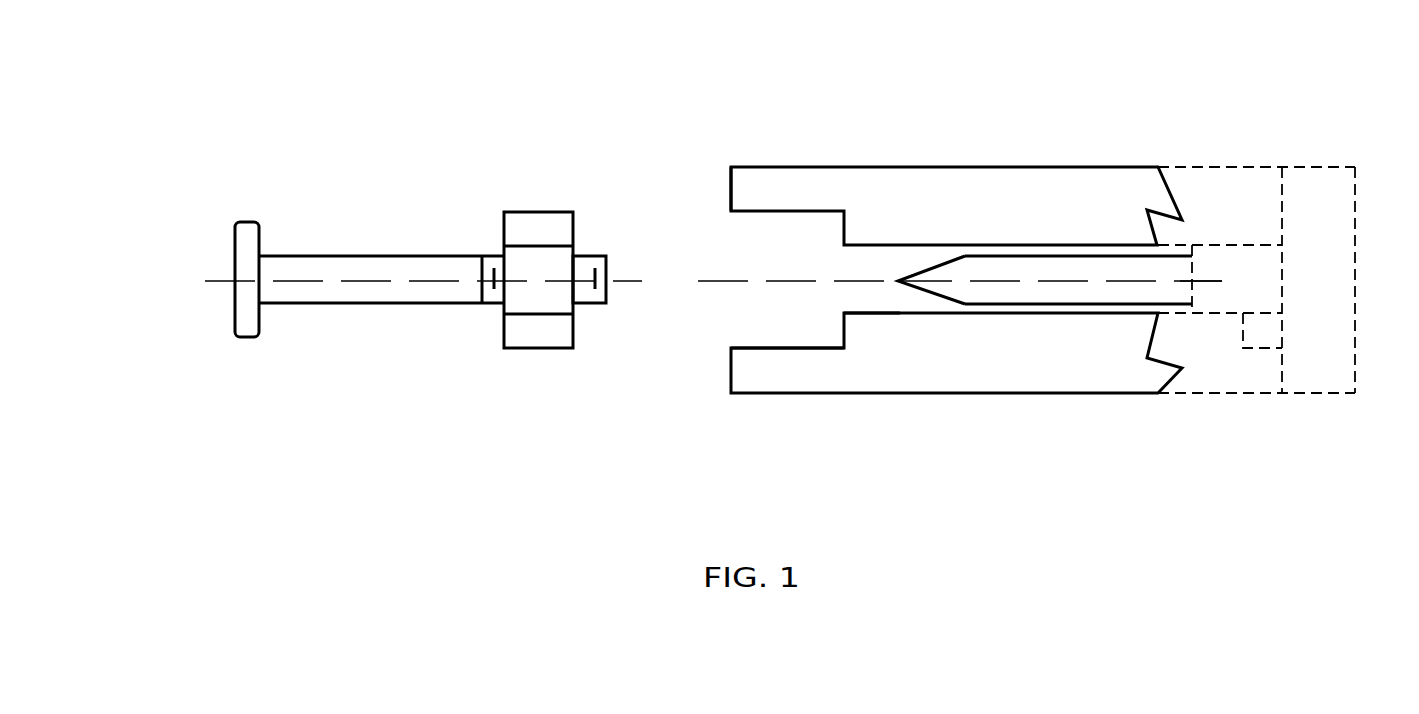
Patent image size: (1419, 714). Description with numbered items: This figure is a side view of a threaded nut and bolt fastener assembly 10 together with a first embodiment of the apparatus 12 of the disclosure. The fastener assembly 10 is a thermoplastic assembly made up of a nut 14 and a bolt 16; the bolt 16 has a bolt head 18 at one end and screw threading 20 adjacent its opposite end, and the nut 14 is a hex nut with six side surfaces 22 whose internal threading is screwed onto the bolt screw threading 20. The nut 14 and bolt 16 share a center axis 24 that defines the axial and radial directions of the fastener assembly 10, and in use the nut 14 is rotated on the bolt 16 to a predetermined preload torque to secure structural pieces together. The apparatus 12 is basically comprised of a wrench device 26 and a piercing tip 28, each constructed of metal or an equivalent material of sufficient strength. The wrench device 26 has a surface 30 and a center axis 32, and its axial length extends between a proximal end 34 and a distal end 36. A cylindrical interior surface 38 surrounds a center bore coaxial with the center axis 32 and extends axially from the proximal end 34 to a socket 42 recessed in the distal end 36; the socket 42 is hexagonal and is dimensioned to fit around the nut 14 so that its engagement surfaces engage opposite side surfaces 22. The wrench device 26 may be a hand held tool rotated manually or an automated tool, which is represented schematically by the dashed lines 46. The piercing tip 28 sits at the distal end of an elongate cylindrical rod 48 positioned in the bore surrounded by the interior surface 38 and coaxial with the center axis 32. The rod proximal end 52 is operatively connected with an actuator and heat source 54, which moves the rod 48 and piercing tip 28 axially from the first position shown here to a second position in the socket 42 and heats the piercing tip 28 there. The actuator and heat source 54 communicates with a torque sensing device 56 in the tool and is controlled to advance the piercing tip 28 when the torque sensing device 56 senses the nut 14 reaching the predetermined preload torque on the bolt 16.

The fastener assembly 10 is at (382, 195).
The apparatus 12 is at (1060, 85).
The nut 14 is at (540, 330).
The bolt 16 is at (384, 292).
The bolt head 18 is at (245, 292).
The screw threading 20 is at (595, 260).
The side surfaces 22 is at (537, 218).
The center axis 24 is at (203, 279).
The wrench device 26 is at (1070, 178).
The piercing tip 28 is at (897, 281).
The surface 30 is at (936, 395).
The center axis 32 is at (738, 279).
The proximal end 34 is at (1287, 192).
The distal end 36 is at (729, 183).
The cylindrical interior surface 38 is at (870, 312).
The socket 42 is at (728, 331).
The dashed lines 46 is at (1325, 183).
The elongate cylindrical rod 48 is at (995, 263).
The rod proximal end 52 is at (1195, 274).
The actuator and heat source 54 is at (1213, 300).
The torque sensing device 56 is at (1268, 333).